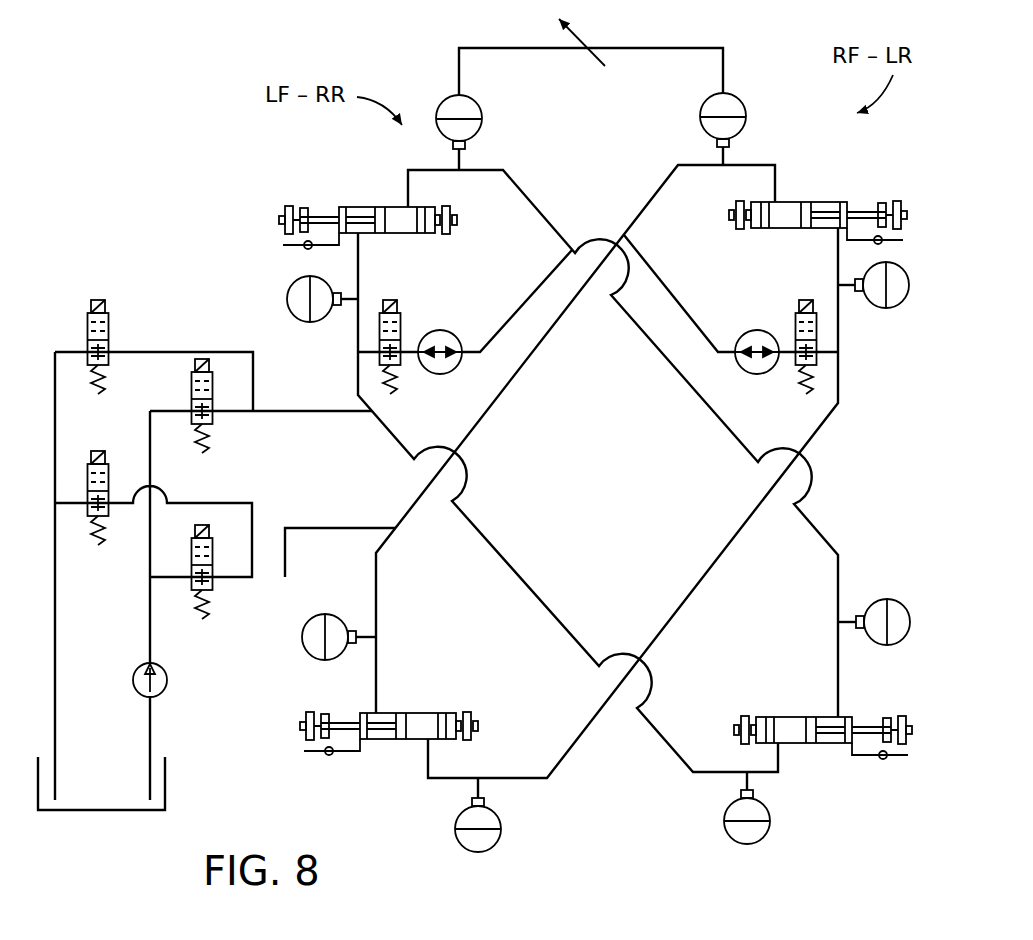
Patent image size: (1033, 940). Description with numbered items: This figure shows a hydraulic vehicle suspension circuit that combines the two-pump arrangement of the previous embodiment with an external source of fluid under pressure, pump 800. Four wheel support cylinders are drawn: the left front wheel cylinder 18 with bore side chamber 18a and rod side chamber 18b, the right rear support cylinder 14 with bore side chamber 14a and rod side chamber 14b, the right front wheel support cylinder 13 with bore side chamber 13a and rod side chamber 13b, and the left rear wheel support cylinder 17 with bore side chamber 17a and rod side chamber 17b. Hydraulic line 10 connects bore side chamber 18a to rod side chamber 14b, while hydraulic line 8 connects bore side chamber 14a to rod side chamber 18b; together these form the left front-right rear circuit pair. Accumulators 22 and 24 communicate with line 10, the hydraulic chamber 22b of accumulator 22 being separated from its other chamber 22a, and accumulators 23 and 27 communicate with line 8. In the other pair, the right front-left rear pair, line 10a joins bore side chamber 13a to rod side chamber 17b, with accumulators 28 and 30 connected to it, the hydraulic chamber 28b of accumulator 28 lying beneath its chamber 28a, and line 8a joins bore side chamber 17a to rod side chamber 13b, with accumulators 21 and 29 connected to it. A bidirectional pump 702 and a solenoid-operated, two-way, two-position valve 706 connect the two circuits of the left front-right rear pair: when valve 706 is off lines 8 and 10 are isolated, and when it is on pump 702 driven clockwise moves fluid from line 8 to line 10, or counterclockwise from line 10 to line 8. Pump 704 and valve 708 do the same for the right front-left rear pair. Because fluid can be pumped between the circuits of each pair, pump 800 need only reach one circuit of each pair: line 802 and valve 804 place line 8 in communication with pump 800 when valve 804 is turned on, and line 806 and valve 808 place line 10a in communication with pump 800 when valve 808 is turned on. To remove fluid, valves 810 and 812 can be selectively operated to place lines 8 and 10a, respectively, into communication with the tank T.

The hydraulic line 8 is at (358, 372).
The hydraulic line 8a is at (842, 353).
The hydraulic line 10 is at (540, 205).
The hydraulic line 10a is at (637, 217).
The right front wheel support cylinder 13 is at (818, 205).
The bore side chamber 13a is at (793, 203).
The rod side chamber 13b is at (837, 203).
The right rear support cylinder 14 is at (823, 723).
The bore side chamber 14a is at (785, 716).
The rod side chamber 14b is at (847, 714).
The left rear wheel support cylinder 17 is at (389, 727).
The bore side chamber 17a is at (423, 712).
The rod side chamber 17b is at (367, 711).
The left front wheel cylinder 18 is at (367, 212).
The bore side chamber 18a is at (395, 205).
The rod side chamber 18b is at (352, 205).
The accumulator 21 is at (453, 850).
The accumulator 22 is at (474, 106).
The accumulator chamber 22a is at (462, 106).
The hydraulic chamber 22b is at (462, 136).
The accumulator 23 is at (292, 283).
The accumulator 24 is at (900, 600).
The accumulator 27 is at (775, 847).
The accumulator 28 is at (768, 104).
The accumulator chamber 28a is at (730, 110).
The hydraulic chamber 28b is at (728, 127).
The accumulator 29 is at (903, 298).
The accumulator 30 is at (305, 657).
The bidirectional pump 702 is at (440, 328).
The bidirectional pump 704 is at (753, 328).
The solenoid-operated two-way two-position valve 706 is at (400, 362).
The solenoid-operated two-way two-position valve 708 is at (790, 366).
The pump 800 is at (153, 698).
The line 802 is at (360, 416).
The valve 804 is at (217, 422).
The line 806 is at (293, 525).
The valve 808 is at (212, 583).
The valve 810 is at (112, 338).
The valve 812 is at (110, 474).
The tank T is at (103, 812).